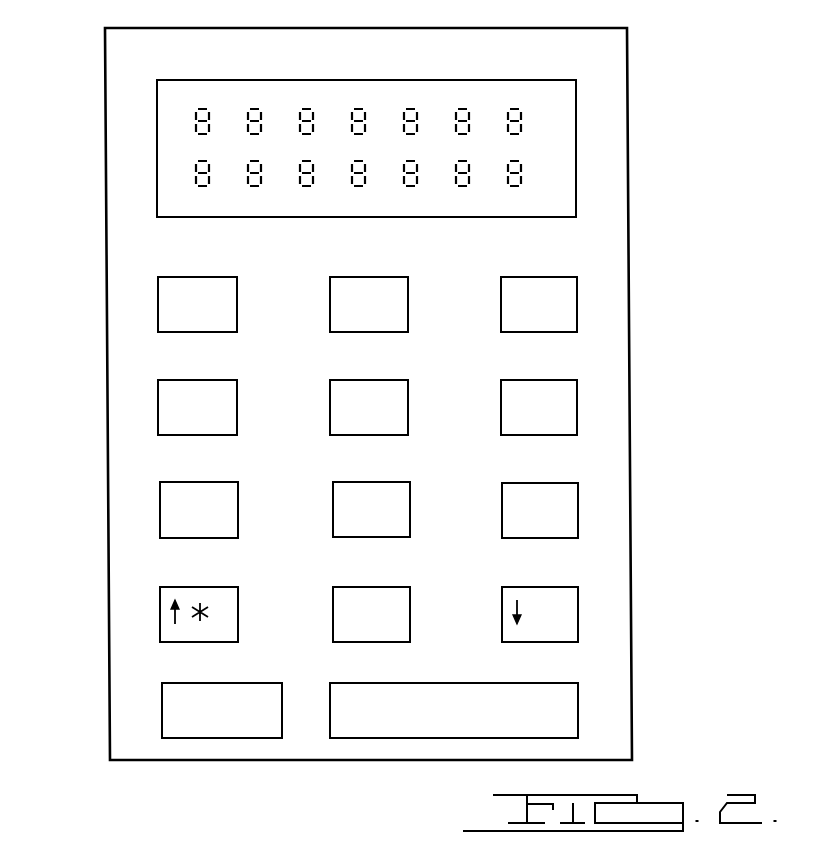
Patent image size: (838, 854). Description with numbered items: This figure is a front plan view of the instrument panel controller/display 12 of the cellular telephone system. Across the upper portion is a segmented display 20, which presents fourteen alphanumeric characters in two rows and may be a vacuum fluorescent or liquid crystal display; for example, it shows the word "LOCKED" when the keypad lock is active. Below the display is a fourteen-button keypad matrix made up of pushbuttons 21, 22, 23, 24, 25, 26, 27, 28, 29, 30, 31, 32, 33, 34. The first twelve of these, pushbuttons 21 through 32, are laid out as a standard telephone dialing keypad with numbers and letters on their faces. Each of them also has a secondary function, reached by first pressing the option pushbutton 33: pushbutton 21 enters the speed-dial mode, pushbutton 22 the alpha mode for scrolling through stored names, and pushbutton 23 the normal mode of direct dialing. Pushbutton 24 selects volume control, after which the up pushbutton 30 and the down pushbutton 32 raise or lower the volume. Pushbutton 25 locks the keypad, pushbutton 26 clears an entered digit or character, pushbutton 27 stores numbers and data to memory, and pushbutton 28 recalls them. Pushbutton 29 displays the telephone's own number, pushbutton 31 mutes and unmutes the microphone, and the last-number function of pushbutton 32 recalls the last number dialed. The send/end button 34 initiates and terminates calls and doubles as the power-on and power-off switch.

The instrument panel controller/display 12 is at (637, 89).
The segmented display 20 is at (157, 93).
The pushbutton 21 is at (158, 306).
The pushbutton 22 is at (330, 300).
The pushbutton 23 is at (577, 303).
The pushbutton 24 is at (158, 409).
The pushbutton 25 is at (330, 411).
The pushbutton 26 is at (577, 420).
The pushbutton 27 is at (160, 516).
The pushbutton 28 is at (333, 516).
The pushbutton 29 is at (578, 515).
The up pushbutton 30 is at (160, 622).
The pushbutton 31 is at (333, 619).
The down pushbutton 32 is at (578, 620).
The option pushbutton 33 is at (162, 710).
The send/end button 34 is at (578, 716).